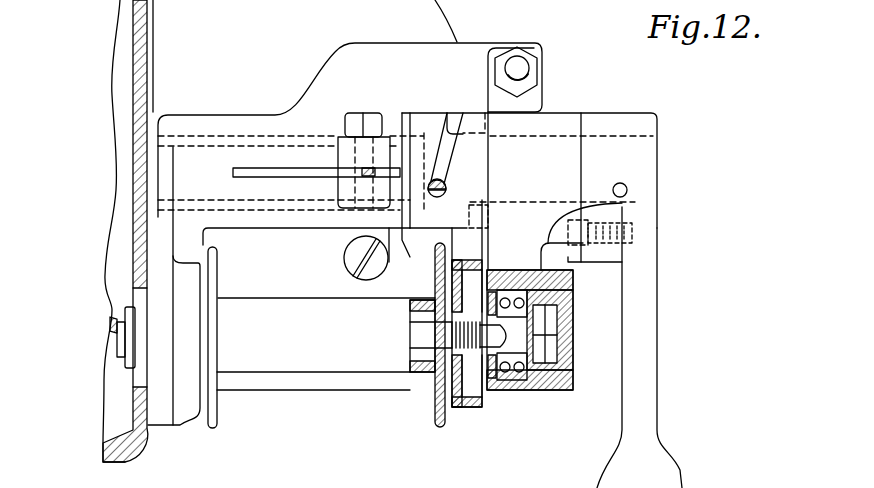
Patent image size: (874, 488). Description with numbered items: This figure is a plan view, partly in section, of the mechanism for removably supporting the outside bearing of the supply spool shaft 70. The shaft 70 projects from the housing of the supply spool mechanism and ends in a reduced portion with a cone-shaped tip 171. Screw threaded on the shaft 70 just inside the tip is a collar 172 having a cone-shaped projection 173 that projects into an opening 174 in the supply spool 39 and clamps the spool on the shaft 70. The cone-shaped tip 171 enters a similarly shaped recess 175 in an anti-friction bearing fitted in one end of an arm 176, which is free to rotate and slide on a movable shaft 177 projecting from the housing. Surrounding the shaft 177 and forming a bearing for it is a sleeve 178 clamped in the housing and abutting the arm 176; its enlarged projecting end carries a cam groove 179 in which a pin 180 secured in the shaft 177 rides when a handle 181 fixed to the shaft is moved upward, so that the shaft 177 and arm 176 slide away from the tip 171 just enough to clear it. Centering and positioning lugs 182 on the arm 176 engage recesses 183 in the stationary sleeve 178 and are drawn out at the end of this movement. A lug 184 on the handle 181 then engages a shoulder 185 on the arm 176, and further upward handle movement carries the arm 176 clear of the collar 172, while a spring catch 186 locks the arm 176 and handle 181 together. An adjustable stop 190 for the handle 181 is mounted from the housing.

The supply spool 39 is at (258, 353).
The supply spool shaft 70 is at (112, 322).
The cone-shaped tip 171 is at (543, 366).
The collar 172 is at (470, 357).
The cone-shaped projection 173 is at (435, 355).
The opening 174 is at (443, 320).
The recess 175 is at (462, 407).
The arm 176 is at (552, 258).
The movable shaft 177 is at (657, 146).
The sleeve 178 is at (404, 262).
The cam groove 179 is at (447, 166).
The pin 180 is at (446, 193).
The handle 181 is at (657, 248).
The centering and positioning lugs 182 is at (490, 147).
The recesses 183 is at (478, 219).
The lug 184 is at (603, 263).
The shoulder 185 is at (581, 207).
The spring catch 186 is at (606, 248).
The adjustable stop 190 is at (522, 70).